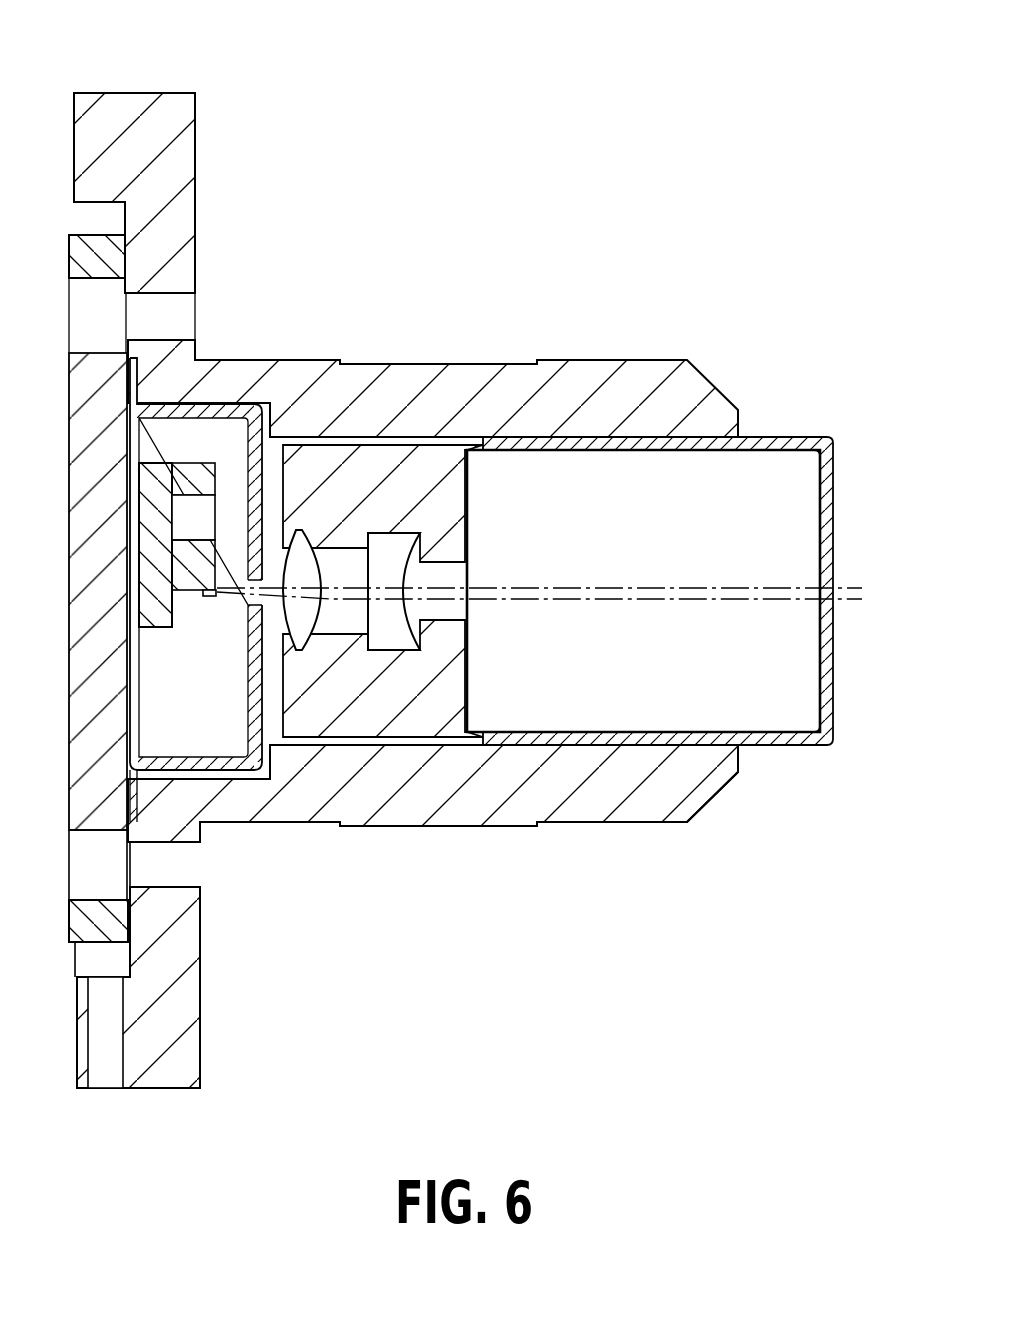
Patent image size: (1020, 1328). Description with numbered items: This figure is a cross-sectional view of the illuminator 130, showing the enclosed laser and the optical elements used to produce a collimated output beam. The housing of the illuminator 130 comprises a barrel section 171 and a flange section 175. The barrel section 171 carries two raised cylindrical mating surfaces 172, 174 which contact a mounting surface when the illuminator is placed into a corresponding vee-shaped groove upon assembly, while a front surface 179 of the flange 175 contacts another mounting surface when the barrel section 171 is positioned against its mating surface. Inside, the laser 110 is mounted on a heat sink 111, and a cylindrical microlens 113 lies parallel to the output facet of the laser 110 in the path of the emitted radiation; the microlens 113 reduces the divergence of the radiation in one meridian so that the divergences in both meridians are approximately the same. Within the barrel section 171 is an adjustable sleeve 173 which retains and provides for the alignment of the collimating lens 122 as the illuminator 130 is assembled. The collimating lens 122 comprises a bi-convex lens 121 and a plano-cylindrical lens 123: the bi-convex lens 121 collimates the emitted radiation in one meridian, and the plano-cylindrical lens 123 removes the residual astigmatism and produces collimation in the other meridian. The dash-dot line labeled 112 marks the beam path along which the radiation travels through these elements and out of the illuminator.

The laser 110 is at (213, 597).
The heat sink 111 is at (155, 463).
The optical axis / ferrule 112 is at (782, 600).
The cylindrical microlens 113 is at (220, 598).
The bi-convex lens 121 is at (332, 650).
The collimating lens 122 is at (427, 328).
The plano-cylindrical lens 123 is at (425, 650).
The illuminator 130 is at (498, 1088).
The barrel section 171 is at (482, 360).
The raised cylindrical mating surface 172 is at (258, 823).
The adjustable sleeve 173 is at (796, 437).
The raised cylindrical mating surface 174 is at (630, 823).
The flange section 175 is at (188, 93).
The front surface 179 is at (200, 1025).